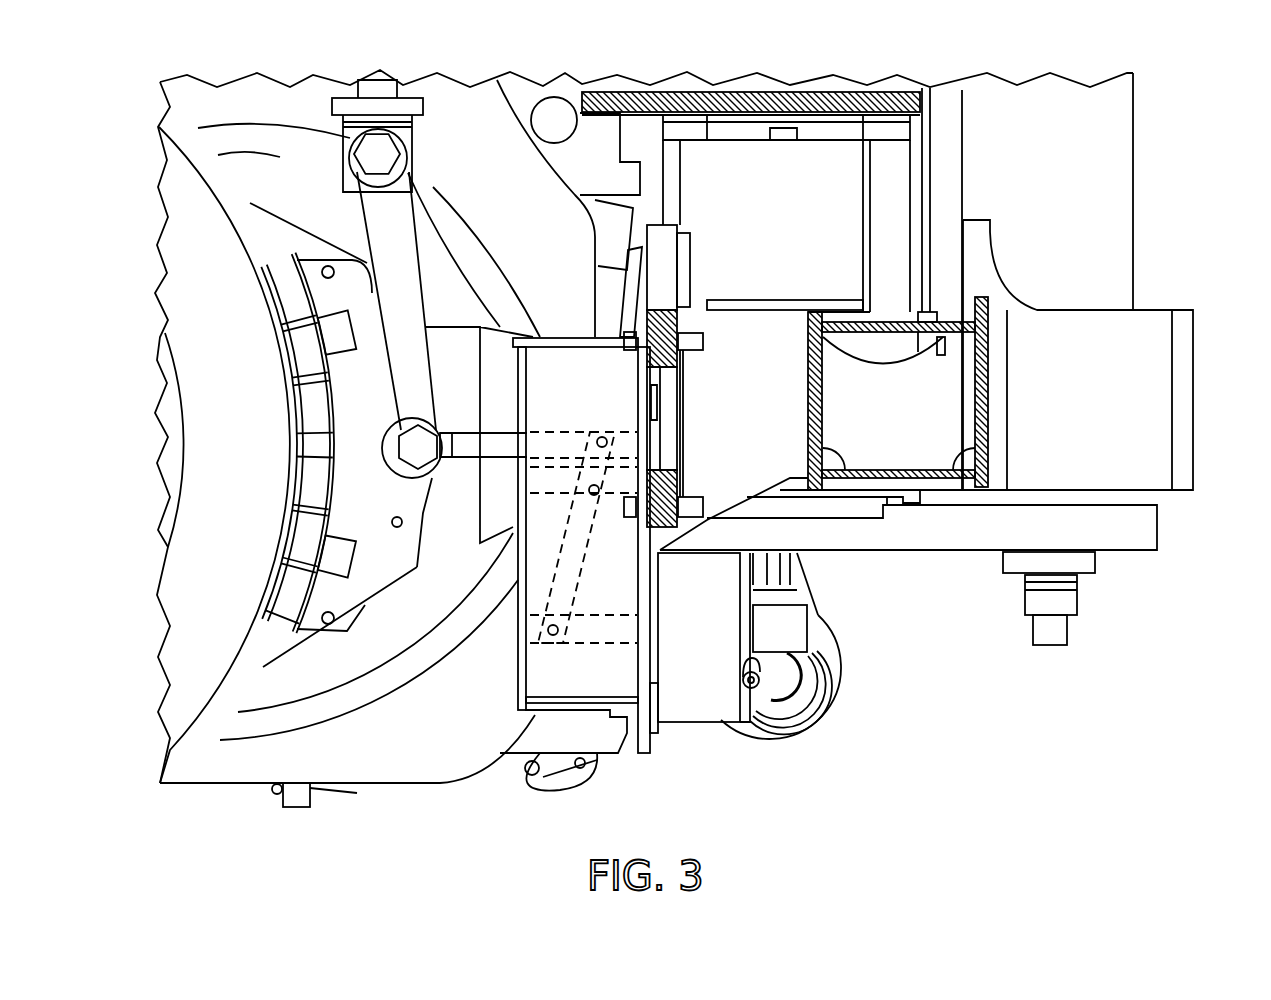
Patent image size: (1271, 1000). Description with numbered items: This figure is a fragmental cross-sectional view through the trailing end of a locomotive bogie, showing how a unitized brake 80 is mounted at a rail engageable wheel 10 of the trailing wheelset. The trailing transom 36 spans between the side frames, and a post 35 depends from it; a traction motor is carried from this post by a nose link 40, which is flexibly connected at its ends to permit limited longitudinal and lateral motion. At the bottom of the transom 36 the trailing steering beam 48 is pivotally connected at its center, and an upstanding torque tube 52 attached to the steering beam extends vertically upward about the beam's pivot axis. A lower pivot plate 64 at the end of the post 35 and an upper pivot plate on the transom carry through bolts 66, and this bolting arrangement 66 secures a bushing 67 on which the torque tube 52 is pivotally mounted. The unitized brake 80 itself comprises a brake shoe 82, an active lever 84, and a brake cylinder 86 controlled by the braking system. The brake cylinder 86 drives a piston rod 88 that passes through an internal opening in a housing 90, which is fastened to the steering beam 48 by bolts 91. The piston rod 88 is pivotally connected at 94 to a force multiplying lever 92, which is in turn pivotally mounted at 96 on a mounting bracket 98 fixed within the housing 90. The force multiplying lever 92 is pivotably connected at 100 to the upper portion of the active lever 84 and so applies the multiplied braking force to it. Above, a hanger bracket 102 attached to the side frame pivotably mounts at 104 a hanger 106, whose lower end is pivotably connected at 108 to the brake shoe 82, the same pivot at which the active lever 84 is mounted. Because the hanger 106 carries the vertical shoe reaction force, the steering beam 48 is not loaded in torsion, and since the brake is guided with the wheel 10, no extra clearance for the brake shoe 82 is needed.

The first rail engageable wheel 10 is at (238, 544).
The post 35 is at (802, 244).
The transom 36 is at (853, 88).
The nose link 40 is at (850, 642).
The trailing steering beam 48 is at (1157, 410).
The torque tube 52 is at (1133, 188).
The lower pivot plate 64 is at (1157, 527).
The through bolts 66 is at (1103, 549).
The bushing 67 is at (1100, 500).
The unitized brake 80 is at (318, 262).
The brake shoe 82 is at (363, 602).
The active lever 84 is at (493, 440).
The brake cylinder 86 is at (690, 716).
The piston rod 88 is at (610, 645).
The housing 90 is at (517, 678).
The bolts 91 is at (697, 355).
The force multiplying lever 92 is at (590, 577).
The pivotal connection 94 is at (553, 642).
The pivot 96 is at (585, 482).
The mounting bracket 98 is at (613, 495).
The pivotable connection 100 is at (602, 437).
The hanger bracket 102 is at (415, 108).
The pivot 104 is at (395, 157).
The hanger 106 is at (403, 248).
The pivot 108 is at (408, 456).